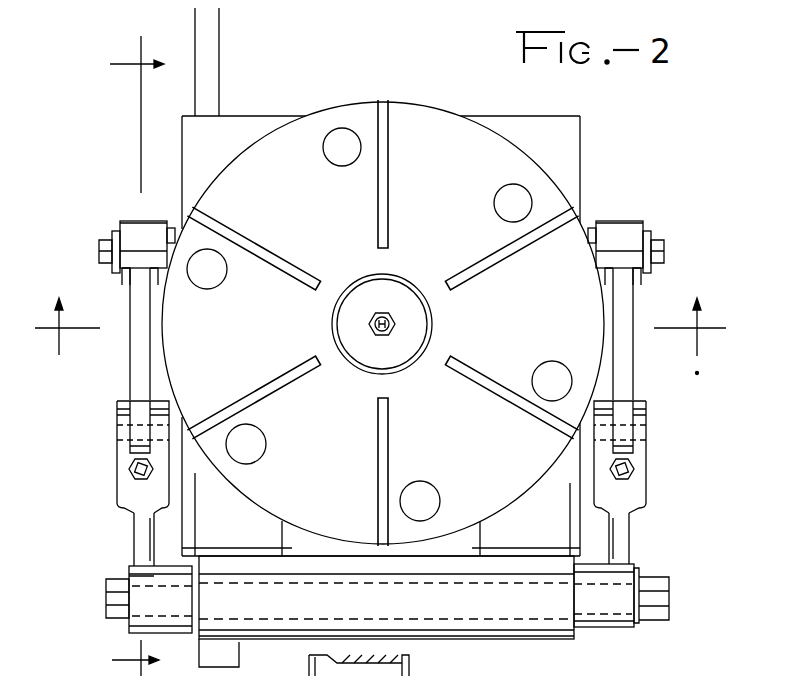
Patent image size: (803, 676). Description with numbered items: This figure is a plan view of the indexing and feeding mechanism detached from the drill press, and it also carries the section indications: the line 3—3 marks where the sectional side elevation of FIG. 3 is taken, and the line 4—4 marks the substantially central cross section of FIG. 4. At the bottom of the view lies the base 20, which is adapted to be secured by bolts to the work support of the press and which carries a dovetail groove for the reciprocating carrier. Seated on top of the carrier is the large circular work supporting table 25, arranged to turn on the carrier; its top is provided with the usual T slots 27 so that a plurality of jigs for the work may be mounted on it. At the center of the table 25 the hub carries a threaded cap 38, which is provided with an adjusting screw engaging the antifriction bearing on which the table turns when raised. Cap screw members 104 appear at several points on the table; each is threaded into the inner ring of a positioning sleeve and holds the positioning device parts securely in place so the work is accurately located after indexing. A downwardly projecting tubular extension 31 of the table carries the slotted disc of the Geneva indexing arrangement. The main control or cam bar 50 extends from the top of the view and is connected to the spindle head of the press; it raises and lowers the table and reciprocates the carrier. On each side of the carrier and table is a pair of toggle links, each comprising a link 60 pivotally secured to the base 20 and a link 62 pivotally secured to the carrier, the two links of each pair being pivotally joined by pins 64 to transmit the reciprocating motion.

The base 20 is at (381, 336).
The work supporting table 25 is at (383, 323).
The T slots 27 is at (488, 247).
The tubular extension 31 is at (342, 665).
The threaded cap 38 is at (411, 317).
The main control or cam bar 50 is at (207, 22).
The link 60 is at (134, 539).
The link 62 is at (130, 355).
The pins 64 is at (120, 436).
The cap screw member 104 is at (216, 274).
The section line 3- 3 is at (148, 356).
The section line 4- 4 is at (380, 325).